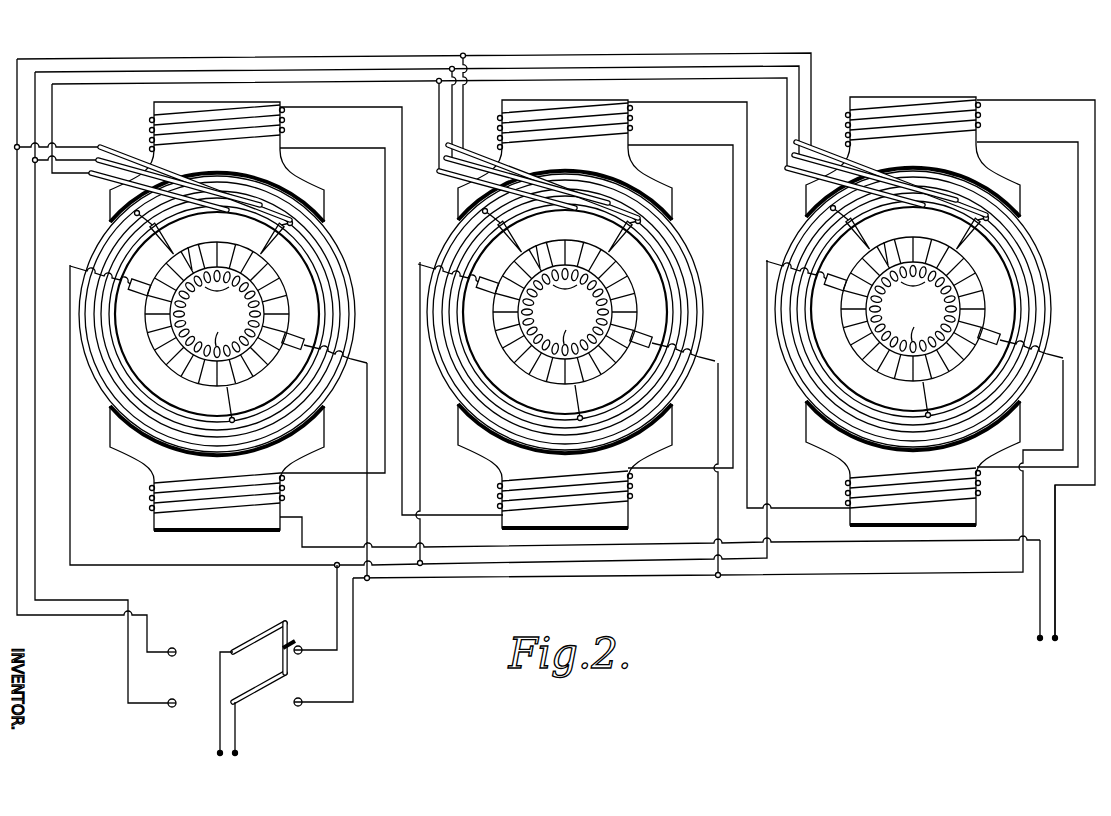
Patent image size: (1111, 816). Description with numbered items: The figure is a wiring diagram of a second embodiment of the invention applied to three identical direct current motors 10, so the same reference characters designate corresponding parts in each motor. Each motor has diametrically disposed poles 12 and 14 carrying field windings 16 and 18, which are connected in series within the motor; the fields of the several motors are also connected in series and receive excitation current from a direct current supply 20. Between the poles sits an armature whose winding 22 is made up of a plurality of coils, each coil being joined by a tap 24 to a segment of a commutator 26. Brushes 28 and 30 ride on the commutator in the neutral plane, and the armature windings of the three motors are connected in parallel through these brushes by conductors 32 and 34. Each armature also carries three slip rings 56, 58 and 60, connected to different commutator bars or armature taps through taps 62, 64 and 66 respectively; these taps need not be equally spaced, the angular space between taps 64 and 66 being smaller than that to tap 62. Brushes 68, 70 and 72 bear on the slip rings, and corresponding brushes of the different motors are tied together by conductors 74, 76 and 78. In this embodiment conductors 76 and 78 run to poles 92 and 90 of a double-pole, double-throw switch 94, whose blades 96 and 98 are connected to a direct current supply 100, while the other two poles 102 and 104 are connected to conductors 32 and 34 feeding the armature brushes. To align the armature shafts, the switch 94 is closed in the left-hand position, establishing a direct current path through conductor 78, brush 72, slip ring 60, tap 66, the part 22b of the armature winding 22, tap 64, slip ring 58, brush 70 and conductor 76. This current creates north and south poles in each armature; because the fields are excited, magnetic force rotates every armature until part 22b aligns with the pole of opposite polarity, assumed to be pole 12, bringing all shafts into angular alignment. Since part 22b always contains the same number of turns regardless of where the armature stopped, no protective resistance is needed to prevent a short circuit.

The direct current electric motor 10 is at (698, 205).
The pole 12 is at (581, 159).
The pole 14 is at (576, 465).
The field winding 16 is at (623, 369).
The field winding 18 is at (565, 480).
The direct current supply 20 is at (1040, 640).
The armature winding 22 is at (565, 311).
The part of the armature winding 22b is at (565, 300).
The tap 24 is at (533, 245).
The commutator 26 is at (537, 395).
The brush 28 is at (458, 292).
The brush 30 is at (672, 334).
The conductor 32 is at (620, 565).
The conductor 34 is at (536, 575).
The slip ring 56 is at (565, 311).
The slip ring 58 is at (701, 264).
The slip ring 60 is at (699, 237).
The tap 62 is at (598, 401).
The tap 64 is at (610, 235).
The tap 66 is at (502, 241).
The brush 68 is at (499, 189).
The brush 70 is at (527, 160).
The brush 72 is at (543, 180).
The conductor 74 is at (74, 90).
The conductor 76 is at (131, 610).
The conductor 78 is at (98, 606).
The pole of switch 90 is at (173, 647).
The pole of switch 92 is at (172, 708).
The double-pole, double-throw switch 94 is at (273, 664).
The switch blade 96 is at (254, 637).
The switch blade 98 is at (258, 692).
The direct current supply 100 is at (220, 755).
The pole of switch 102 is at (300, 655).
The pole of switch 104 is at (300, 708).